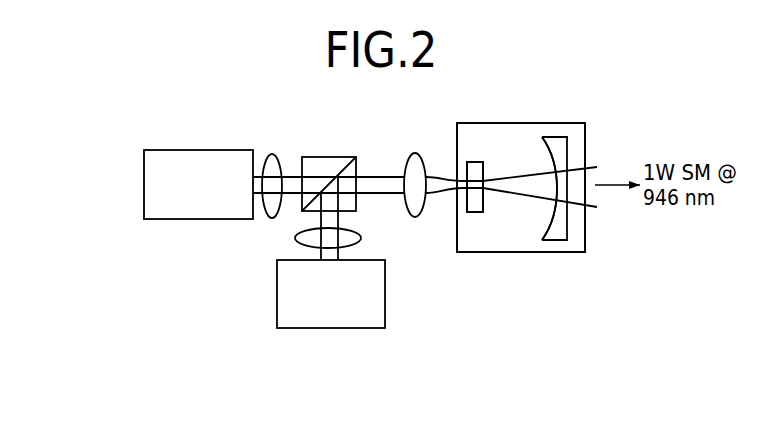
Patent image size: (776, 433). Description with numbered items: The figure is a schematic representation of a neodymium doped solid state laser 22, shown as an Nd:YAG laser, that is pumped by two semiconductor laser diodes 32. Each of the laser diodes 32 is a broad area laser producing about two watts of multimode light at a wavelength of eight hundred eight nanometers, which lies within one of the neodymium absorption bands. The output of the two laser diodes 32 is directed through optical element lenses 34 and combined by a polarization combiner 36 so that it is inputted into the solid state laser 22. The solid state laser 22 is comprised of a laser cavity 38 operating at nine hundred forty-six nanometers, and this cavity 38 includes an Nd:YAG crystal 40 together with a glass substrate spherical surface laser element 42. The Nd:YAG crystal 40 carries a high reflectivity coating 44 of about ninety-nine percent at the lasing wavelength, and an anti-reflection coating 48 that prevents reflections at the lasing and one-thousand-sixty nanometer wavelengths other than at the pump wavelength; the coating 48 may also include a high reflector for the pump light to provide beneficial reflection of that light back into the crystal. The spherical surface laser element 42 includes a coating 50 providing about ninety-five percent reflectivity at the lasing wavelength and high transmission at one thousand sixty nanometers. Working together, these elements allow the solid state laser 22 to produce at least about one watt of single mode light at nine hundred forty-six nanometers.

The solid state laser 22 is at (498, 73).
The semiconductor laser diodes 32 is at (142, 188).
The optical element lenses 34 is at (271, 150).
The polarization combiner 36 is at (352, 160).
The 946 nm laser cavity 38 is at (509, 258).
The Nd:YAG crystal 40 is at (473, 161).
The glass substrate spherical surface laser element 42 is at (560, 251).
The 946 nm high reflectivity coating 44 is at (466, 207).
The anti-reflection coating 48 is at (483, 205).
The coating 50 is at (549, 155).